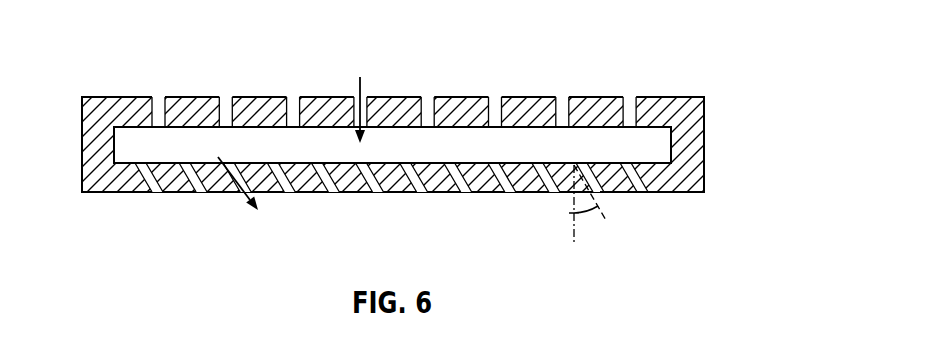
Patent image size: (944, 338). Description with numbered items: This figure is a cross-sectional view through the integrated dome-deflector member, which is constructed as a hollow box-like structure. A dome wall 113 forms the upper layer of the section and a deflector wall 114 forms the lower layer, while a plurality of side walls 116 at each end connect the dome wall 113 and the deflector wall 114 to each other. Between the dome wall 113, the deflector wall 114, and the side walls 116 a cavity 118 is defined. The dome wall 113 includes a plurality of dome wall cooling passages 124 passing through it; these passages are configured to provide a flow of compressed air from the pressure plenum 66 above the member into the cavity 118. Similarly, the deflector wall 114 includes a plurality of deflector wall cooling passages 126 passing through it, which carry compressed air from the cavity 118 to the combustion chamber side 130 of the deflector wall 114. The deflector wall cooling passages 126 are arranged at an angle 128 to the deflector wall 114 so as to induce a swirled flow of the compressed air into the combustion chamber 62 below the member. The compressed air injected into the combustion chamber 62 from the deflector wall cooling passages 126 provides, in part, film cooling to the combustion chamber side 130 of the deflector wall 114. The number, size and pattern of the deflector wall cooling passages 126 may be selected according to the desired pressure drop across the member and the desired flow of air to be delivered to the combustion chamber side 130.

The pressure plenum 66 is at (103, 60).
The combustion chamber 62 is at (103, 237).
The side walls 116 is at (92, 133).
The dome wall 113 is at (329, 100).
The deflector wall 114 is at (177, 179).
The cavity 118 is at (482, 142).
The dome wall cooling passages 124 is at (228, 84).
The deflector wall cooling passages 126 is at (334, 208).
The angle 128 is at (589, 212).
The combustion chamber side 130 is at (629, 208).